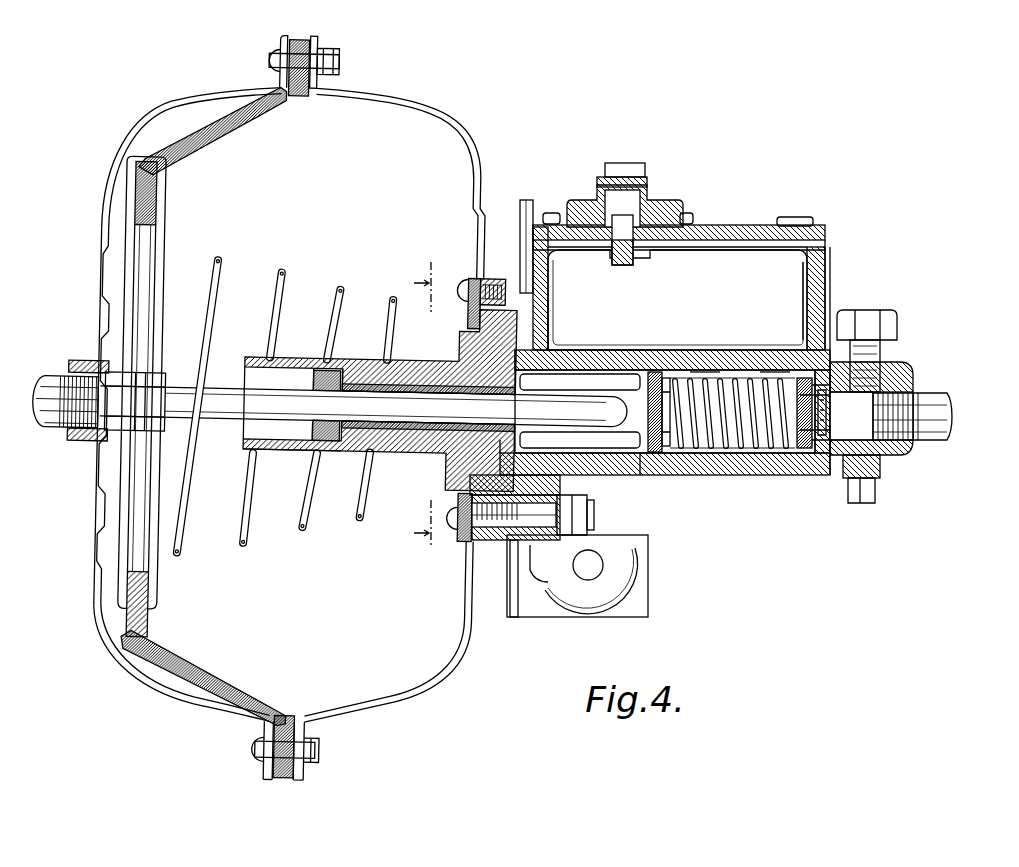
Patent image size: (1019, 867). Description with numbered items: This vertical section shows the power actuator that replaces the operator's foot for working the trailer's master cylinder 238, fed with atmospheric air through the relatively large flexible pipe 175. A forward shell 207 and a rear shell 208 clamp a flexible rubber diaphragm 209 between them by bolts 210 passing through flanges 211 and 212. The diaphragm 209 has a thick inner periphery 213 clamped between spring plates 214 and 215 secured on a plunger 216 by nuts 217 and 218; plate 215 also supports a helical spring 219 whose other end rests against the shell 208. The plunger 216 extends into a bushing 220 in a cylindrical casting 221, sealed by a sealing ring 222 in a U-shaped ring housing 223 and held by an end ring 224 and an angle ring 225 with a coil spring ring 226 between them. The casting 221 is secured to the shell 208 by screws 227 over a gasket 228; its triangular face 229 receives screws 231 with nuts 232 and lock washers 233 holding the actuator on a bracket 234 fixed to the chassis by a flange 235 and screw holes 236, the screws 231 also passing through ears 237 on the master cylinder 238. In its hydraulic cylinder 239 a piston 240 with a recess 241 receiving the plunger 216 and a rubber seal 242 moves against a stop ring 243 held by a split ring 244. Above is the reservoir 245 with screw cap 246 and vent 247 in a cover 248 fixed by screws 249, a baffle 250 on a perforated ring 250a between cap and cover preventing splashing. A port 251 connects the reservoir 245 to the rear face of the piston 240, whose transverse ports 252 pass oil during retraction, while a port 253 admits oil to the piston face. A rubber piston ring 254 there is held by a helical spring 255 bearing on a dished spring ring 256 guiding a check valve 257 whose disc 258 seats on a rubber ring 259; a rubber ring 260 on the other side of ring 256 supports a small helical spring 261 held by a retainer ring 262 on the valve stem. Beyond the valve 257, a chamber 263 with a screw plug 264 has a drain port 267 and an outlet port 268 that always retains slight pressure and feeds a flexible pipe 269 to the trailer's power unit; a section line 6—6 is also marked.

The flexible pipe 175 is at (45, 385).
The forward shell 207 is at (180, 95).
The rear shell 208 is at (420, 103).
The flexible rubber diaphragm 209 is at (245, 125).
The bolts 210 is at (333, 64).
The flange 211 is at (280, 52).
The flange 212 is at (318, 45).
The thick inner periphery 213 is at (160, 225).
The spring plate 214 is at (138, 190).
The spring plate 215 is at (165, 195).
The plunger 216 is at (180, 395).
The nut 217 is at (100, 447).
The nut 218 is at (190, 457).
The helical spring 219 is at (245, 545).
The bushing 220 is at (410, 440).
The cylindrical casting 221 is at (418, 378).
The sealing ring 222 is at (300, 455).
The ring housing 223 is at (316, 373).
The end ring 224 is at (345, 384).
The angle ring 225 is at (338, 372).
The coil spring ring 226 is at (327, 457).
The screws 227 is at (455, 285).
The gasket 228 is at (455, 525).
The triangular face 229 is at (505, 535).
The screws 231 is at (590, 508).
The nuts 232 is at (596, 530).
The lock washers 233 is at (542, 583).
The bracket 234 is at (528, 215).
The flange 235 is at (635, 595).
The screw holes 236 is at (602, 565).
The ears 237 is at (512, 560).
The master cylinder 238 is at (560, 468).
The hydraulic cylinder 239 is at (625, 368).
The piston 240 is at (640, 468).
The recess 241 is at (590, 392).
The rubber seal 242 is at (548, 355).
The ring 243 is at (555, 345).
The split ring 244 is at (555, 300).
The reservoir 245 is at (825, 270).
The screw cap 246 is at (630, 183).
The vent 247 is at (670, 195).
The cover 248 is at (730, 230).
The screws 249 is at (810, 220).
The baffle 250 is at (628, 252).
The perforated ring 250a is at (625, 175).
The port 251 is at (666, 378).
The transverse ports 252 is at (668, 368).
The port 253 is at (712, 365).
The rubber piston ring 254 is at (790, 362).
The helical spring 255 is at (740, 455).
The dished spring ring 256 is at (880, 370).
The check valve 257 is at (912, 380).
The disc 258 is at (835, 420).
The rubber ring 259 is at (822, 445).
The rubber ring 260 is at (805, 452).
The small helical spring 261 is at (805, 325).
The retainer ring 262 is at (800, 440).
The chamber 263 is at (868, 418).
The screw plug 264 is at (895, 325).
The drain port 267 is at (875, 490).
The outlet port 268 is at (840, 400).
The flexible pipe 269 is at (945, 425).
The section line 6 is at (415, 405).